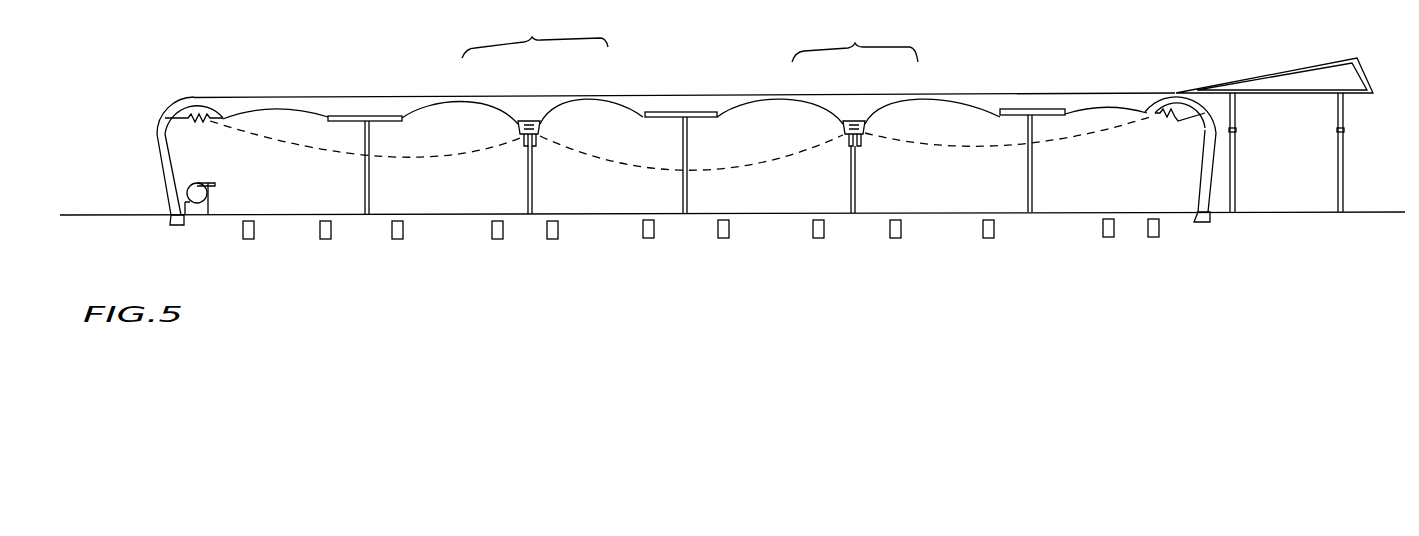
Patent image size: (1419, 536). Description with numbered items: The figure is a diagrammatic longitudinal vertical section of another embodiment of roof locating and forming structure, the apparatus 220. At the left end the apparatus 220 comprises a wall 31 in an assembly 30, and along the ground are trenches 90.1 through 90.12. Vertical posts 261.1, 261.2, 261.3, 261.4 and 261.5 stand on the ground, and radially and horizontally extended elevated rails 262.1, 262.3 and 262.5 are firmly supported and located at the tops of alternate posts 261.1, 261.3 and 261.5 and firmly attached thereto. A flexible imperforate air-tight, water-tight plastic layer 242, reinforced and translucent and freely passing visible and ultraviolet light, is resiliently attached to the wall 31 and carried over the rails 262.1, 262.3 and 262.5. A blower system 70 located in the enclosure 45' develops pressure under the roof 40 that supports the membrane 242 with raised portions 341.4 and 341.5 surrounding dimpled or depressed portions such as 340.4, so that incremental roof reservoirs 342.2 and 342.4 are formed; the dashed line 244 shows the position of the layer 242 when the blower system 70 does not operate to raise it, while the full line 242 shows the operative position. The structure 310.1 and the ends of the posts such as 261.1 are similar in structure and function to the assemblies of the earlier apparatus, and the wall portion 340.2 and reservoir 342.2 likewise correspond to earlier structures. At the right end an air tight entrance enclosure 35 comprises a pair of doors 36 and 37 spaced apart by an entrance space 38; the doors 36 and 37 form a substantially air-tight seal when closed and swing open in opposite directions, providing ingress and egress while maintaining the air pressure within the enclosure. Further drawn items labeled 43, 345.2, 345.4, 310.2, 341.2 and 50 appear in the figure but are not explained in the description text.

The assembly 30 is at (197, 90).
The apparatus 220 is at (150, 117).
The tension spring 43 is at (208, 121).
The wall 31 is at (165, 178).
The blower system 70 is at (190, 183).
The flexible plastic layer 242 is at (284, 80).
The elevated rail 262.1 is at (357, 116).
The vertical post 261.1 is at (365, 195).
The wall portion 340.2 is at (510, 114).
The connector 345.2 is at (528, 121).
The structure 310.1 is at (541, 133).
The vertical post 261.2 is at (527, 195).
The incremental roof reservoir 342.2 is at (535, 36).
The roof fabric section 341.2 is at (586, 99).
The elevated rail 262.3 is at (710, 80).
The vertical post 261.3 is at (683, 195).
The raised portion 341.4 is at (788, 98).
The depressed portion 340.4 is at (838, 116).
The connector 345.4 is at (856, 121).
The tensioning device 310.2 is at (886, 130).
The vertical post 261.4 is at (851, 195).
The incremental roof reservoir 342.4 is at (855, 44).
The raised portion 341.5 is at (915, 97).
The roof 40 is at (983, 99).
The enclosure 45' is at (918, 171).
The elevated rail 262.5 is at (1034, 109).
The vertical post 261.5 is at (1028, 195).
The dashed line 244 is at (1083, 139).
The air tight entrance enclosure 35 is at (1290, 70).
The door 36 is at (1236, 156).
The door 37 is at (1338, 156).
The entrance space 38 is at (1287, 181).
The ground 50 is at (1355, 212).
The trench 90.1 is at (246, 240).
The trench 90.12 is at (1156, 239).